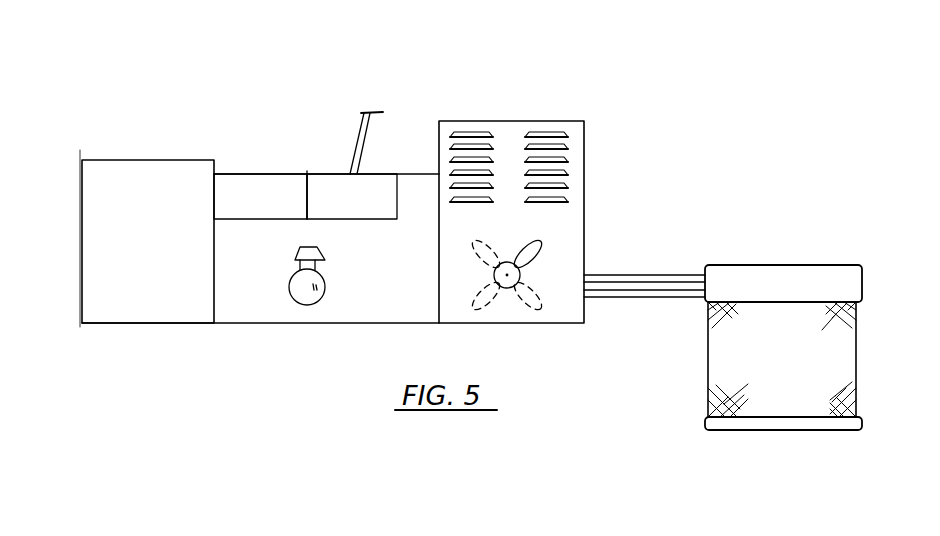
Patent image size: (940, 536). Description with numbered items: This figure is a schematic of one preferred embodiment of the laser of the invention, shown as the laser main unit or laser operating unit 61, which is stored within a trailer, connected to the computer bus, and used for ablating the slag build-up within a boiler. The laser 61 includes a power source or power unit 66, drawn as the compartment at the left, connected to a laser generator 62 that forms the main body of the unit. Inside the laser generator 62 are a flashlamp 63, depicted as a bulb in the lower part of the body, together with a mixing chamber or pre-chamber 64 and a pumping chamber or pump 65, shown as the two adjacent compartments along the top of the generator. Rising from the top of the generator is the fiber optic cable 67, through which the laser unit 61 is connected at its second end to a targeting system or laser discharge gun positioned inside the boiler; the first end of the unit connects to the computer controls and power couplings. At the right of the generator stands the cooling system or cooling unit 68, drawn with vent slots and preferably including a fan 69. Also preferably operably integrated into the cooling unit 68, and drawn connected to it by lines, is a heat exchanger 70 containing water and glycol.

The laser operating unit 61 is at (612, 53).
The laser generator 62 is at (257, 325).
The flashlamp 63 is at (327, 287).
The pre-chamber 64 is at (252, 188).
The pumping chamber 65 is at (324, 183).
The power source 66 is at (142, 318).
The fiber optic cable 67 is at (359, 133).
The cooling unit 68 is at (587, 168).
The fan 69 is at (543, 245).
The heat exchanger 70 is at (856, 338).